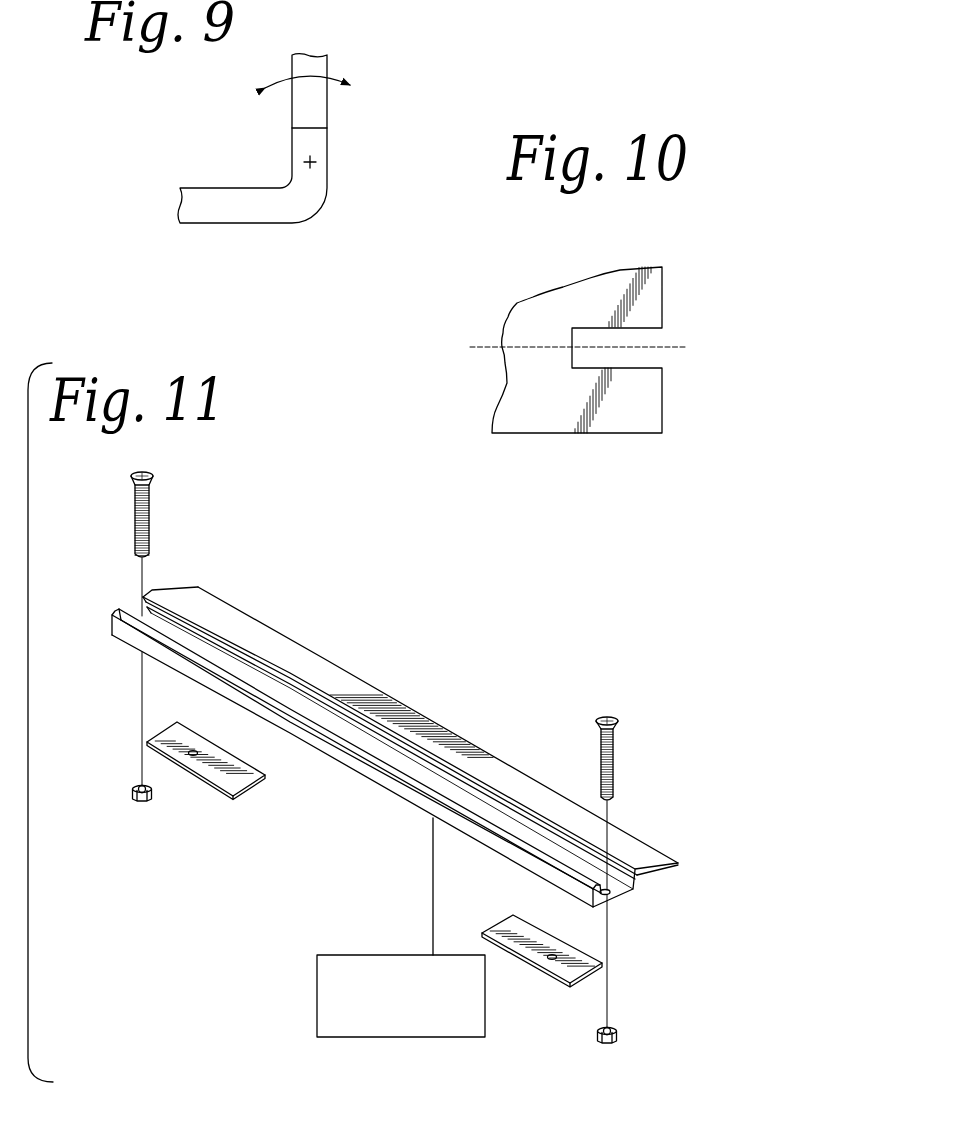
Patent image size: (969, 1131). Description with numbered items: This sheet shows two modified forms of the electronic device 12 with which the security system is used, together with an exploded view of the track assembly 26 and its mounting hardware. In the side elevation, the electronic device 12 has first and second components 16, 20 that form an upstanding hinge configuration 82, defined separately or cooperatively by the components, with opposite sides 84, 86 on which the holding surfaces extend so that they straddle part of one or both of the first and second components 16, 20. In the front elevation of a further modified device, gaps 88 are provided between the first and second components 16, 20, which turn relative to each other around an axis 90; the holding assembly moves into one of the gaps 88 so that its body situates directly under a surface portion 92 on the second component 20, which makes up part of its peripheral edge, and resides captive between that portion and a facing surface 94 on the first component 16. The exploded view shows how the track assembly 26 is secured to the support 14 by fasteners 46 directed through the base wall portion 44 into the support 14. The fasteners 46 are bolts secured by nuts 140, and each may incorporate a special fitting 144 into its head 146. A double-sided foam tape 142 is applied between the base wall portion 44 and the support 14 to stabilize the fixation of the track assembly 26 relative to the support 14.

In FIG. 9, the electronic device 12 is at (185, 157).
In FIG. 10, the electronic device 12 is at (674, 438).
In FIG. 9, the first component 16 is at (237, 208).
In FIG. 10, the first component 16 is at (628, 420).
In FIG. 9, the second component 20 is at (313, 108).
In FIG. 10, the second component 20 is at (652, 290).
In FIG. 9, the hinge configuration 82 is at (349, 209).
In FIG. 9, the side of hinge arrangement 84 is at (292, 145).
In FIG. 9, the side of hinge arrangement 86 is at (327, 170).
In FIG. 10, the gaps 88 is at (608, 366).
In FIG. 10, the axis 90 is at (675, 349).
In FIG. 10, the surface portion 92 is at (602, 326).
In FIG. 10, the facing surface 94 is at (633, 367).
In FIG. 11, the track assembly 26 is at (401, 801).
In FIG. 11, the base wall portion 44 is at (622, 893).
In FIG. 11, the fasteners 46 is at (152, 522).
In FIG. 11, the special fitting 144 is at (607, 716).
In FIG. 11, the head 146 is at (617, 721).
In FIG. 11, the double-sided foam tape 142 is at (248, 790).
In FIG. 11, the nuts 140 is at (152, 801).
In FIG. 11, the support 14 is at (410, 1025).